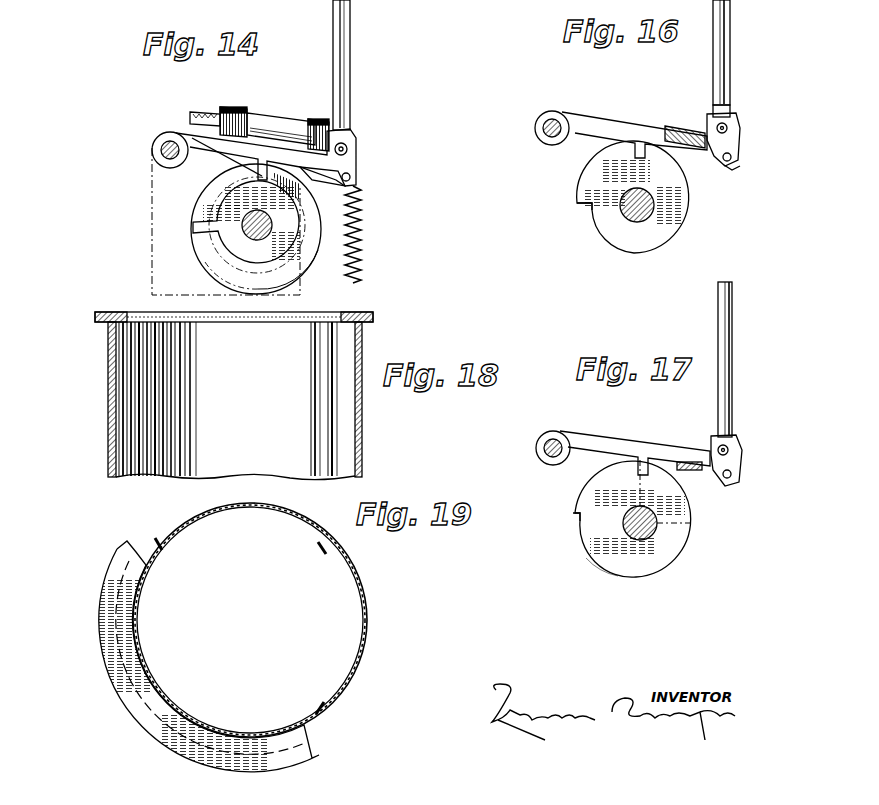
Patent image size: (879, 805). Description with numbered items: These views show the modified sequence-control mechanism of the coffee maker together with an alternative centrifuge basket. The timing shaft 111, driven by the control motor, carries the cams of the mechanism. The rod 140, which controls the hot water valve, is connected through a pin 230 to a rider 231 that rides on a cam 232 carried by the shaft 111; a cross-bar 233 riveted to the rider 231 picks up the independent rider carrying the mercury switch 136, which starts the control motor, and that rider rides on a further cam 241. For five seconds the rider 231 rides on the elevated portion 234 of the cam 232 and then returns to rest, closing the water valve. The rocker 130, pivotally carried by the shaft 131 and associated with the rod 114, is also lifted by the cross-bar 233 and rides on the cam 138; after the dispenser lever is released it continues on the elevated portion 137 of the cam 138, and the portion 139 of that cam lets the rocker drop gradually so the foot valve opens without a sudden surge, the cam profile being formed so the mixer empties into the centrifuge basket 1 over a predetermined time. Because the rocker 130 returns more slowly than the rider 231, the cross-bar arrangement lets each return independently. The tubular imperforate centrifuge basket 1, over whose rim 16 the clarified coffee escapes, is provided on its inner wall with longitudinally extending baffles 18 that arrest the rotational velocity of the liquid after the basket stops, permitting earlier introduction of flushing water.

In FIG. 18, the centrifuge basket 1 is at (362, 352).
In FIG. 19, the centrifuge basket 1 is at (368, 614).
In FIG. 18, the rim 16 is at (348, 314).
In FIG. 19, the rim 16 is at (105, 600).
In FIG. 18, the longitudinally extending baffles 18 is at (327, 358).
In FIG. 19, the longitudinally extending baffles 18 is at (160, 550).
In FIG. 14, the shaft 111 is at (245, 236).
In FIG. 16, the shaft 111 is at (655, 212).
In FIG. 17, the shaft 111 is at (653, 538).
In FIG. 14, the rod 114 is at (352, 92).
In FIG. 17, the rod 114 is at (733, 304).
In FIG. 14, the rocker 130 is at (357, 162).
In FIG. 17, the rocker 130 is at (612, 438).
In FIG. 14, the shaft 131 is at (160, 158).
In FIG. 16, the shaft 131 is at (548, 140).
In FIG. 17, the shaft 131 is at (548, 455).
In FIG. 14, the mercury switch 136 is at (265, 118).
In FIG. 17, the elevated portion 137 is at (576, 514).
In FIG. 14, the cam 138 is at (196, 210).
In FIG. 17, the cam 138 is at (665, 563).
In FIG. 17, the portion 139 is at (605, 572).
In FIG. 16, the rod 140 is at (731, 42).
In FIG. 16, the pin 230 is at (729, 128).
In FIG. 16, the rider 231 is at (733, 168).
In FIG. 16, the cam 232 is at (665, 240).
In FIG. 14, the cross-bar 233 is at (350, 184).
In FIG. 17, the cross-bar 233 is at (690, 472).
In FIG. 16, the elevated portion 234 is at (580, 195).
In FIG. 14, the cam 241 is at (362, 237).